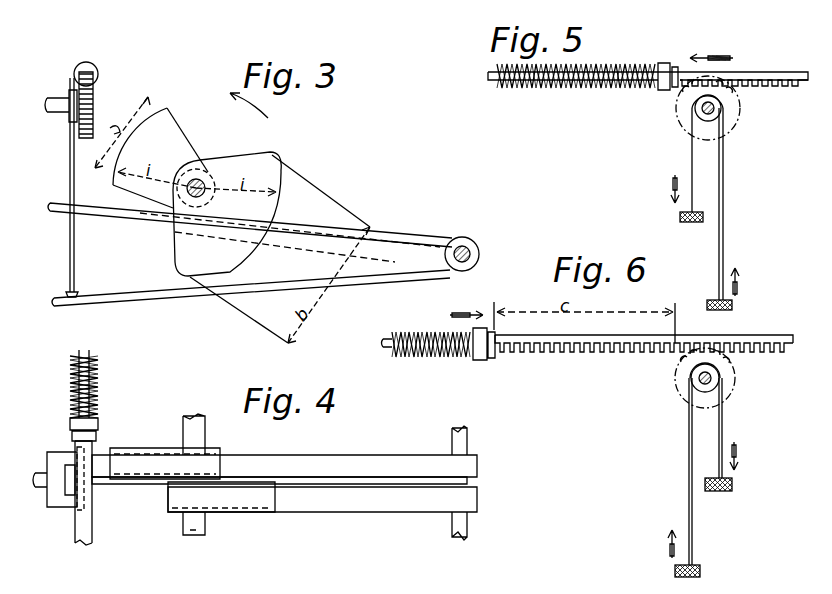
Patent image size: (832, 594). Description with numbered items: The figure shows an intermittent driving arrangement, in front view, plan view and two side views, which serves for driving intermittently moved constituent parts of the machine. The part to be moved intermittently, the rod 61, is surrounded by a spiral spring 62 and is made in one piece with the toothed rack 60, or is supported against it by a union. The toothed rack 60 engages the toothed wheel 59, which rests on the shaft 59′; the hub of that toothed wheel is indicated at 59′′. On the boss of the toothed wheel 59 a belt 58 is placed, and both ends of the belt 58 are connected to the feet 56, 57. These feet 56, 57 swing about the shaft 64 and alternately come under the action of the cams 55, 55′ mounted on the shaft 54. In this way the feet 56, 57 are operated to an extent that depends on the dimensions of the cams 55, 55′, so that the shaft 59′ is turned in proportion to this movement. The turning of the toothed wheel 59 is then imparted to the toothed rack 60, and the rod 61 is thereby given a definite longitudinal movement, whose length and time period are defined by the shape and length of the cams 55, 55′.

In FIG. 3, the shaft 54 is at (202, 180).
In FIG. 4, the shaft 54 is at (194, 532).
In FIG. 3, the cam 55 is at (290, 239).
In FIG. 4, the cam 55 is at (221, 515).
In FIG. 3, the cam 55' is at (181, 149).
In FIG. 4, the cam 55' is at (165, 450).
In FIG. 3, the foot 56 is at (143, 222).
In FIG. 4, the foot 56 is at (362, 460).
In FIG. 5, the foot 56 is at (679, 217).
In FIG. 6, the foot 56 is at (700, 572).
In FIG. 3, the foot 57 is at (150, 292).
In FIG. 4, the foot 57 is at (380, 506).
In FIG. 5, the foot 57 is at (734, 305).
In FIG. 6, the foot 57 is at (733, 488).
In FIG. 3, the belt 58 is at (70, 178).
In FIG. 5, the belt 58 is at (724, 174).
In FIG. 6, the belt 58 is at (689, 452).
In FIG. 3, the toothed wheel 59 is at (97, 102).
In FIG. 4, the toothed wheel 59 is at (59, 495).
In FIG. 5, the toothed wheel 59 is at (724, 108).
In FIG. 3, the shaft 59' is at (52, 120).
In FIG. 4, the shaft 59' is at (40, 480).
In FIG. 6, the shaft 59' is at (722, 378).
In FIG. 5, the pinion hub 59'' is at (678, 121).
In FIG. 3, the toothed rack 60 is at (79, 77).
In FIG. 4, the toothed rack 60 is at (92, 536).
In FIG. 5, the toothed rack 60 is at (785, 72).
In FIG. 6, the toothed rack 60 is at (768, 338).
In FIG. 4, the rod 61 is at (95, 366).
In FIG. 5, the rod 61 is at (626, 66).
In FIG. 6, the rod 61 is at (393, 339).
In FIG. 4, the spiral spring 62 is at (96, 398).
In FIG. 5, the spiral spring 62 is at (662, 62).
In FIG. 6, the spiral spring 62 is at (484, 344).
In FIG. 3, the shaft 64 is at (466, 244).
In FIG. 4, the shaft 64 is at (463, 443).